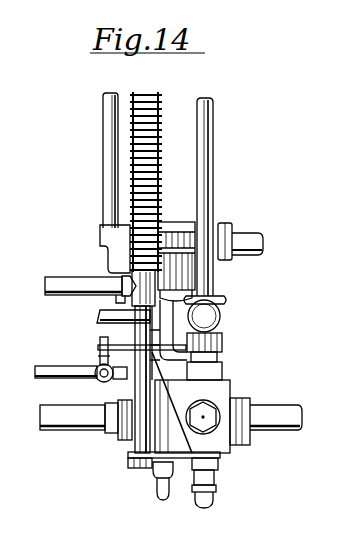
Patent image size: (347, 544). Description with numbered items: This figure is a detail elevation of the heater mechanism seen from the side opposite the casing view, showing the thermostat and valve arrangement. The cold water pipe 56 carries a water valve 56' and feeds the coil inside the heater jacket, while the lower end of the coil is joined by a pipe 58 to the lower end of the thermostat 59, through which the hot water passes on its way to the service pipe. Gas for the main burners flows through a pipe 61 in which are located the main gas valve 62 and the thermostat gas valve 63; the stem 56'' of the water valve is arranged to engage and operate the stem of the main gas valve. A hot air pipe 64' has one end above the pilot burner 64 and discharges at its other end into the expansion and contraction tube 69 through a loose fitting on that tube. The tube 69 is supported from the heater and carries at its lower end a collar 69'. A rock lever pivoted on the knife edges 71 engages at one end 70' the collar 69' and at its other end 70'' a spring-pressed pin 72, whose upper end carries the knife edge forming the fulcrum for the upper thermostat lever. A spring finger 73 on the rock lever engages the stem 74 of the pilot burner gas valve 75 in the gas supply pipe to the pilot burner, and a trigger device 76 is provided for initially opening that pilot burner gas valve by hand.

The cold water pipe 56 is at (183, 176).
The water valve 56' is at (213, 261).
The stem of the water valve 56'' is at (237, 340).
The pipe 58 is at (100, 319).
The thermostat 59 is at (214, 153).
The pipe 61 is at (42, 432).
The main gas valve 62 is at (156, 472).
The thermostat gas valve 63 is at (216, 464).
The pilot burner 64 is at (118, 281).
The hot air pipe 64' is at (87, 264).
The expansion and contraction tube 69 is at (154, 173).
The collar 69' is at (149, 392).
The end of rock lever 70' is at (103, 461).
The end of rock lever 70'' is at (226, 489).
The knife edges 71 is at (170, 468).
The spring-pressed pin 72 is at (214, 440).
The spring finger 73 is at (120, 364).
The stem of the pilot burner gas valve 74 is at (97, 351).
The pilot burner gas valve 75 is at (66, 366).
The trigger device 76 is at (98, 368).